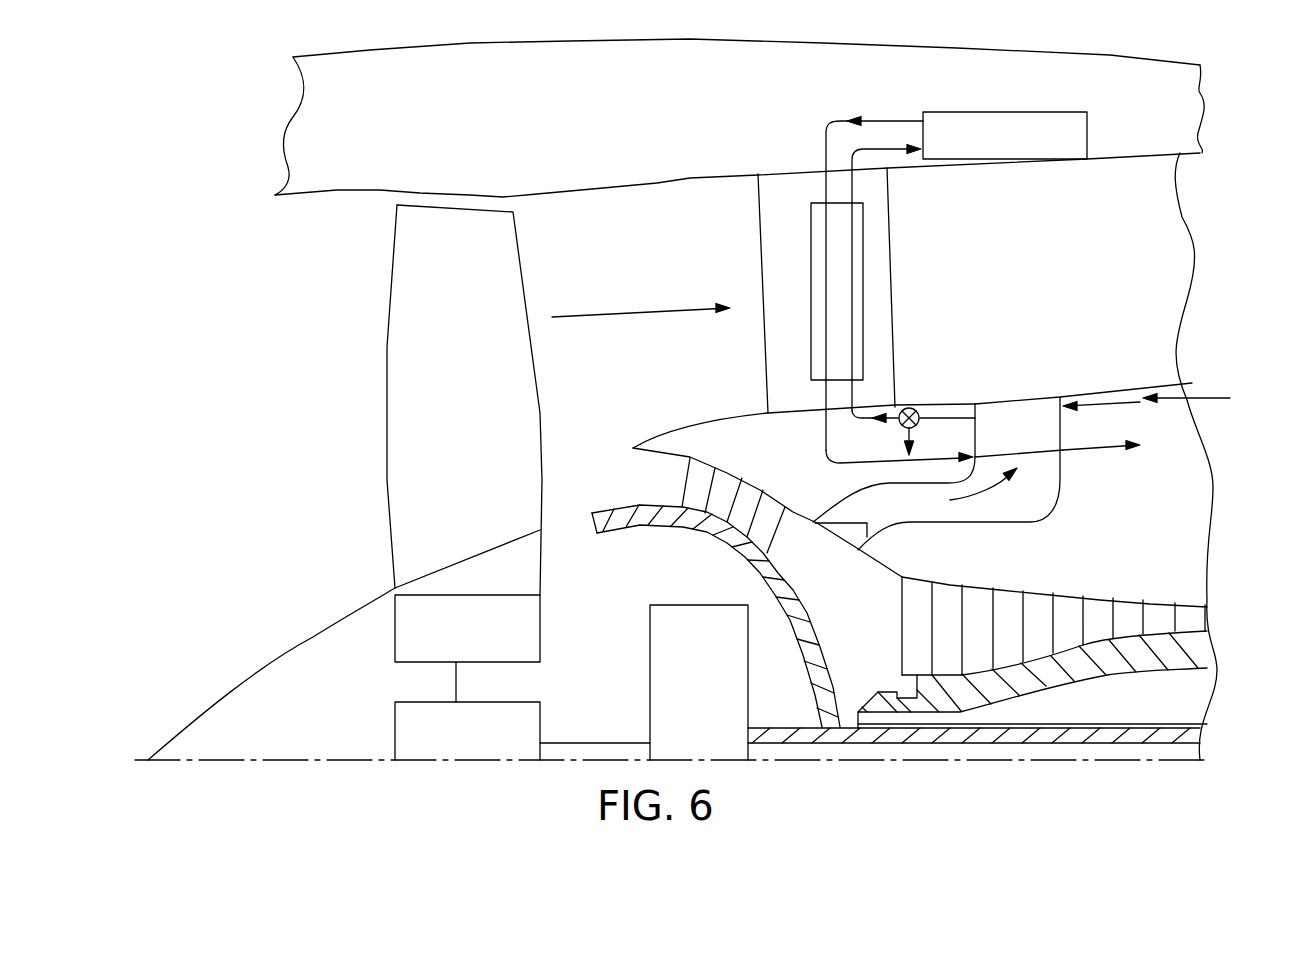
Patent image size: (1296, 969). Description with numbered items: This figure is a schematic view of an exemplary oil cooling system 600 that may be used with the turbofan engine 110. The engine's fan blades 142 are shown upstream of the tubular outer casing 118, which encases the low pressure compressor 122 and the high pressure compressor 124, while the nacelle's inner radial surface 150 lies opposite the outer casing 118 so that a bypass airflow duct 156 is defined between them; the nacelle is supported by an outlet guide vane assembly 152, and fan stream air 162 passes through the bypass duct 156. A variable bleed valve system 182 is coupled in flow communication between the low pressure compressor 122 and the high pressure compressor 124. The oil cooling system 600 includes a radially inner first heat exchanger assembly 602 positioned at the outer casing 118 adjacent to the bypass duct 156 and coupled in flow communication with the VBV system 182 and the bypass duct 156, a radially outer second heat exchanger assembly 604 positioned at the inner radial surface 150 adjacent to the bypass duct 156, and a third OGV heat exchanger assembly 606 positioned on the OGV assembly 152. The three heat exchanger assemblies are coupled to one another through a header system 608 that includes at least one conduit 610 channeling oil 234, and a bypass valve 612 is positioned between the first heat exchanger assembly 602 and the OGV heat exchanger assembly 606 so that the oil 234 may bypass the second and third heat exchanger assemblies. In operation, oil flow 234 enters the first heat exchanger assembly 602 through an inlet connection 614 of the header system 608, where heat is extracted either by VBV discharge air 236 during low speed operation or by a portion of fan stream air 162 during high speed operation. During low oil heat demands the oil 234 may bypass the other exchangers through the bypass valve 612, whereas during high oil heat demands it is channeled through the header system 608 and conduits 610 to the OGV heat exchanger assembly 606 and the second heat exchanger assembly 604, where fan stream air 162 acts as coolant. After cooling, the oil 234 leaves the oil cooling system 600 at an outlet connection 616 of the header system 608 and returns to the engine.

The oil cooling system 600 is at (1100, 45).
The second heat exchanger assembly 604 is at (1005, 128).
The conduit 610 is at (824, 133).
The OGV heat exchanger assembly 606 is at (863, 252).
The bypass airflow duct 156 is at (1150, 235).
The inner radial surface 150 is at (673, 185).
The fan stream air 162 is at (632, 311).
The fan blades 142 is at (412, 358).
The outlet guide vane (OGV) assembly 152 is at (763, 325).
The bypass valve 612 is at (911, 406).
The first heat exchanger assembly 602 is at (1023, 415).
The inlet connection 614 is at (1103, 400).
The outer casing 118 is at (1167, 382).
The oil flow 234 is at (1210, 398).
The header system 608 is at (804, 446).
The outlet connection 616 is at (1085, 450).
The VBV discharge air 236 is at (930, 502).
The variable bleed valve (VBV) system 182 is at (943, 523).
The low pressure (LP) compressor 122 is at (750, 560).
The turbofan engine 110 is at (660, 572).
The high pressure (HP) compressor 124 is at (1062, 672).